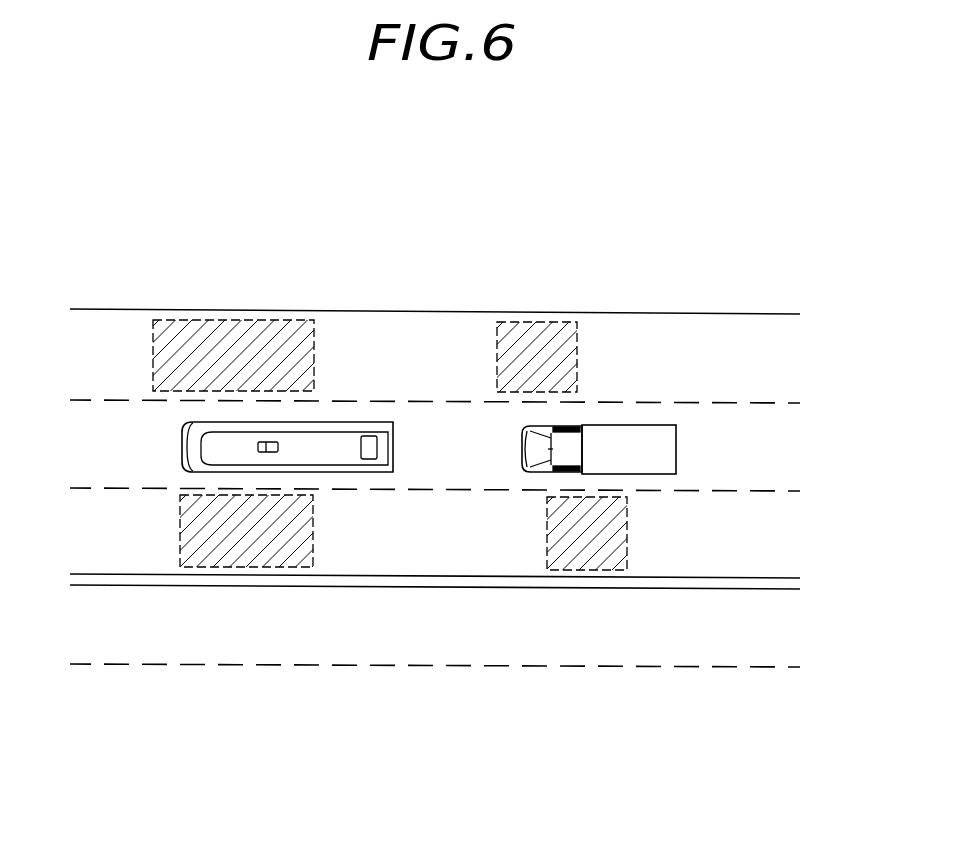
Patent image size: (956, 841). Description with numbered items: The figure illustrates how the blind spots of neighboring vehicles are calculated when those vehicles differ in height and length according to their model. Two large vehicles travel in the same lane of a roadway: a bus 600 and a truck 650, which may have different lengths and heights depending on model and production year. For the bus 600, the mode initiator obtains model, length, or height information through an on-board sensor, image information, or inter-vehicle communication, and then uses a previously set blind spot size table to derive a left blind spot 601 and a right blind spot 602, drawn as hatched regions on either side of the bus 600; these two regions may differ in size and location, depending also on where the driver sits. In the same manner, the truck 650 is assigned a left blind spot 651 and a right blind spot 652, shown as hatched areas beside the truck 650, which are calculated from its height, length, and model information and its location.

The bus 600 is at (330, 422).
The left blind spot 601 is at (275, 567).
The right blind spot 602 is at (201, 318).
The truck 650 is at (660, 425).
The left blind spot 651 is at (606, 570).
The right blind spot 652 is at (522, 322).